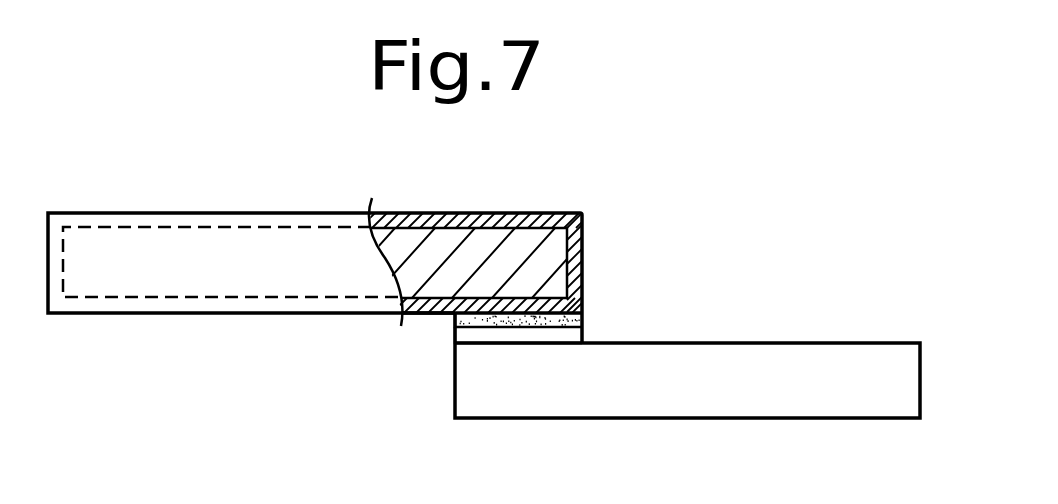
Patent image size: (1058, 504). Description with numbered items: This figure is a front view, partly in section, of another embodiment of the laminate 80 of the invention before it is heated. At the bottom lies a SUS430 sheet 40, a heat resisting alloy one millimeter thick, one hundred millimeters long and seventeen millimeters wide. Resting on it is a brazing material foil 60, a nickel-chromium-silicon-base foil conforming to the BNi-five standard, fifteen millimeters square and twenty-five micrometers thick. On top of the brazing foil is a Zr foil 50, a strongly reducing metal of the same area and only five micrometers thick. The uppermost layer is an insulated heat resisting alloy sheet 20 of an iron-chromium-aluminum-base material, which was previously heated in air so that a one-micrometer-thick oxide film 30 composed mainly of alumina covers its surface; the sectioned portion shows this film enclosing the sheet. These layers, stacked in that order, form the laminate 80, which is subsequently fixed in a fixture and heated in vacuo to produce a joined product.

The insulated heat resisting alloy sheet 20 is at (477, 252).
The oxide film 30 is at (584, 226).
The SUS430 sheet 40 is at (743, 398).
The Zr foil 50 is at (584, 316).
The brazing material foil 60 is at (584, 333).
The laminate 80 is at (721, 289).